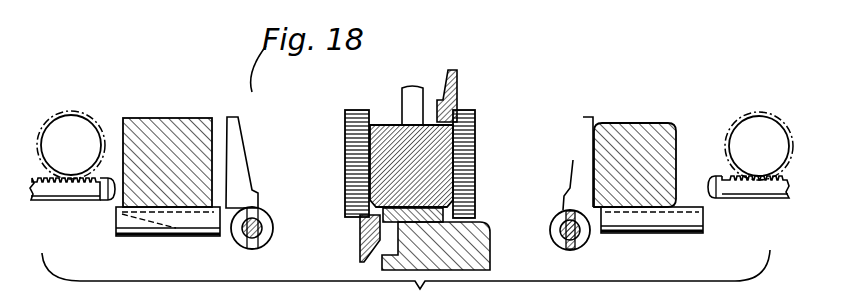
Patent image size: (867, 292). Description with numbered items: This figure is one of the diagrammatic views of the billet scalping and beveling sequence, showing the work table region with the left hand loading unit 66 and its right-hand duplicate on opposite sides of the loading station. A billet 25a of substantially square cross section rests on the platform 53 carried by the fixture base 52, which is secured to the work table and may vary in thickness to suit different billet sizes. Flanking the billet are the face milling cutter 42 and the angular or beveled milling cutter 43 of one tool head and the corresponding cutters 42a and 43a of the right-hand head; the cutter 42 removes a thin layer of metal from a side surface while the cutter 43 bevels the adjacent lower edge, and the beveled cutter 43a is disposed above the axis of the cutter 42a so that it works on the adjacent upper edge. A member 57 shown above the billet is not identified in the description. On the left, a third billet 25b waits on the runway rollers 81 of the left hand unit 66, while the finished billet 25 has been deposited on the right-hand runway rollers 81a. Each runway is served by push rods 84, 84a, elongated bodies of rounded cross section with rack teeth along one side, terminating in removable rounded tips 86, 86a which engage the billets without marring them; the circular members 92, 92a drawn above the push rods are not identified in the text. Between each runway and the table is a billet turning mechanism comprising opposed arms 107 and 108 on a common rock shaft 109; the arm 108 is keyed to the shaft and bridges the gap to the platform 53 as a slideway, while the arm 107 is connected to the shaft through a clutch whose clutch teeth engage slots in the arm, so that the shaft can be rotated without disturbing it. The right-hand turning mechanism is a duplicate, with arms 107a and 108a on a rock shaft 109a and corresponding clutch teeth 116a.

The left hand loading unit 66 is at (138, 105).
The ring 92 is at (88, 128).
The push rod 84 is at (62, 192).
The removable tip 86 is at (108, 202).
The rollers 81 is at (139, 237).
The third billet 25b is at (190, 120).
The companion arm 108 is at (248, 152).
The arm 107 is at (228, 240).
The rock shaft 109 is at (274, 221).
The face milling cutter 42 is at (345, 167).
The second billet 25a is at (380, 122).
The face milling cutter 42a is at (477, 165).
The shaft 57 is at (414, 88).
The angular milling cutter 43a is at (458, 96).
The angular milling cutter 43 is at (360, 236).
The platform 53 is at (462, 214).
The base 52 is at (484, 247).
The lever 108a is at (576, 181).
The link 116a is at (562, 208).
The pivot boss 107a is at (598, 240).
The pivot pin 109a is at (551, 231).
The billet 25 is at (662, 132).
The base 81a is at (695, 238).
The ring 92a is at (754, 126).
The rack end 86a is at (715, 175).
The rack 84a is at (765, 200).